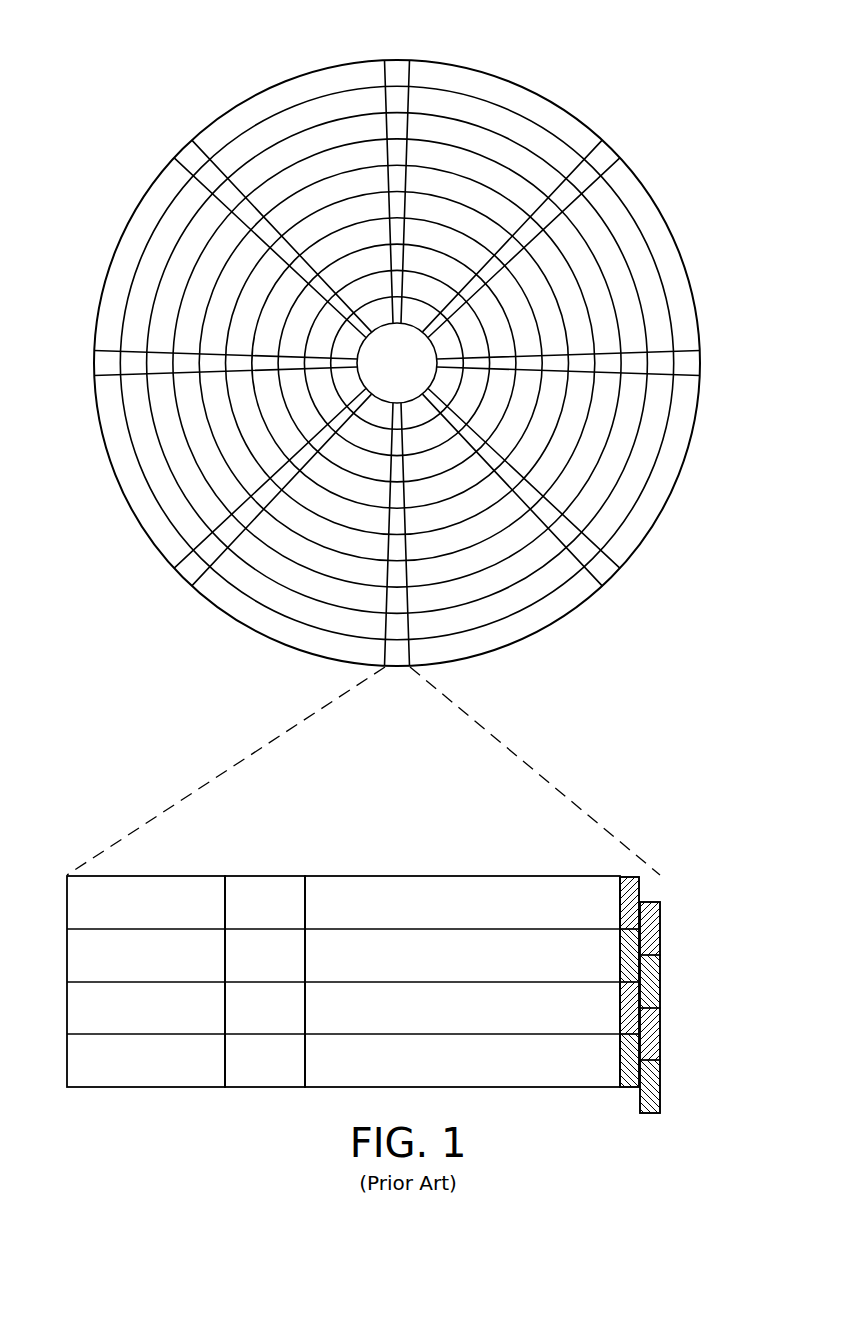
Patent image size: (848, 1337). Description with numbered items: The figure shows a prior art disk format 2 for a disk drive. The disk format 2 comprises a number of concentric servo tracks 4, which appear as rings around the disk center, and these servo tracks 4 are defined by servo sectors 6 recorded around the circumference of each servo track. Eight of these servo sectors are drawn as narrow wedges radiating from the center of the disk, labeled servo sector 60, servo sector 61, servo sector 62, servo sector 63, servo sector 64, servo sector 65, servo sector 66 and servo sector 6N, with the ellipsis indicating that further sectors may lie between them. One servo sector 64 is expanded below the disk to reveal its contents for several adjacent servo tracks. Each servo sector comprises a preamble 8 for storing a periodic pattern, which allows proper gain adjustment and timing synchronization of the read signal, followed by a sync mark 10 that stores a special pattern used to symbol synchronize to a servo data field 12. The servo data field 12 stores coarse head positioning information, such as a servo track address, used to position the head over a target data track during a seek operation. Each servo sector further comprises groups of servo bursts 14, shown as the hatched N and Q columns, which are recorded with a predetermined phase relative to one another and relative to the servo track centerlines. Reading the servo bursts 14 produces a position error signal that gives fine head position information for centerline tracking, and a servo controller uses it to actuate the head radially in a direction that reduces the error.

The disk format 2 is at (396, 373).
The servo tracks 4 is at (520, 107).
The servo sectors 6 is at (396, 373).
The servo sector 60 is at (398, 71).
The servo sector 61 is at (603, 158).
The servo sector 62 is at (692, 366).
The servo sector 63 is at (603, 571).
The servo sector 64 is at (262, 736).
The servo sector 65 is at (188, 571).
The servo sector 66 is at (100, 363).
The servo sector 6N is at (246, 219).
The preamble 8 is at (152, 875).
The sync mark 10 is at (265, 875).
The servo data field 12 is at (448, 875).
The servo bursts 14 is at (657, 876).